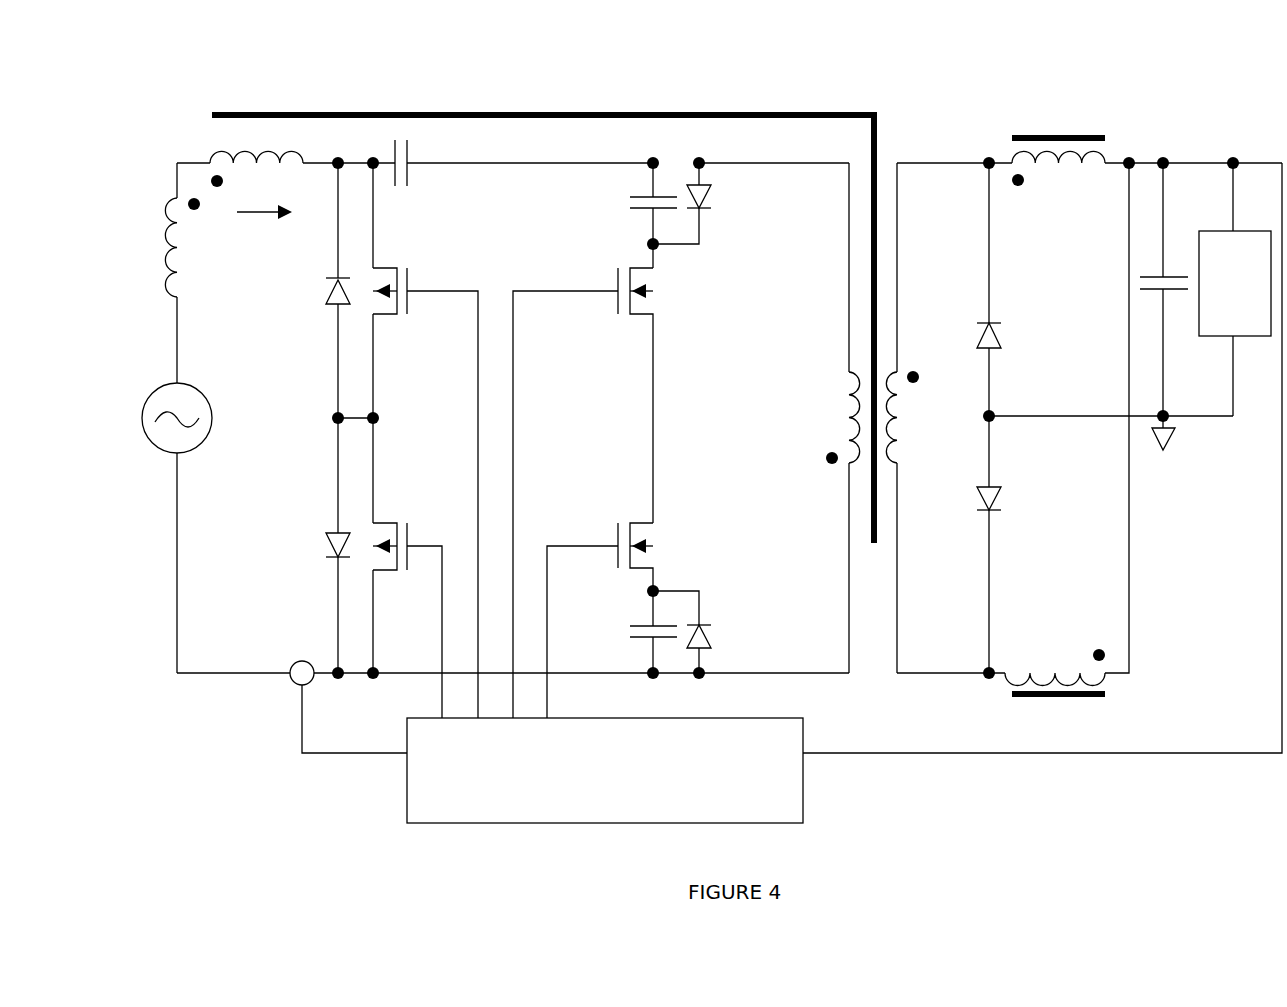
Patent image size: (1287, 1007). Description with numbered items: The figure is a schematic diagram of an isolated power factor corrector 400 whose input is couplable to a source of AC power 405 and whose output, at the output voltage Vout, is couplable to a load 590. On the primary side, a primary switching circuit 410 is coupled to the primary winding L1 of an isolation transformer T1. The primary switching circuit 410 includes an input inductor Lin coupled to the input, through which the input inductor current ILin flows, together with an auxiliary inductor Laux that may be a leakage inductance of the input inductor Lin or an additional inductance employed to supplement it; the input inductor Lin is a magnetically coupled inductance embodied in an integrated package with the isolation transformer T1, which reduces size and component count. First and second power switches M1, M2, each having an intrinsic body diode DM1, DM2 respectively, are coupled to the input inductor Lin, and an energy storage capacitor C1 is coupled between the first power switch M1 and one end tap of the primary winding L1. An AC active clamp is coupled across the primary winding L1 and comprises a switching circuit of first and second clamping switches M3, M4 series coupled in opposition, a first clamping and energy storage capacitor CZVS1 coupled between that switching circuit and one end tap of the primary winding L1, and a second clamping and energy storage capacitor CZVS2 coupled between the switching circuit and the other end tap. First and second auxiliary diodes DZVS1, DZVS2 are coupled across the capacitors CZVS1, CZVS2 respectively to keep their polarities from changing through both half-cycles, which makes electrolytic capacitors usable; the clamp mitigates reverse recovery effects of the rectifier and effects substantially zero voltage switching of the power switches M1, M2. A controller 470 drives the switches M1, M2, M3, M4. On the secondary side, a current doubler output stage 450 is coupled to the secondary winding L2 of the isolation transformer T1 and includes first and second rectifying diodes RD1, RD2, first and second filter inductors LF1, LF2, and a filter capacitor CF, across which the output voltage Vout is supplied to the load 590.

The isolated power factor corrector 400 is at (148, 66).
The primary switching circuit 410 is at (420, 105).
The current doubler output stage 450 is at (1190, 115).
The source of AC power 405 is at (184, 418).
The controller 470 is at (605, 770).
The load 590 is at (1235, 289).
The input inductor Lin is at (286, 145).
The auxiliary inductor Laux is at (200, 236).
The input inductor current ILin is at (264, 202).
The energy storage capacitor C1 is at (520, 173).
The intrinsic body diode of first power switch DM1 is at (316, 290).
The intrinsic body diode of second power switch DM2 is at (316, 545).
The first power switch M1 is at (425, 440).
The second power switch M2 is at (407, 568).
The first clamping switch M3 is at (583, 481).
The second clamping switch M4 is at (600, 608).
The first clamping and energy storage capacitor CZVS1 is at (613, 215).
The second clamping and energy storage capacitor CZVS2 is at (613, 649).
The first auxiliary diode DZVS1 is at (715, 203).
The second auxiliary diode DZVS2 is at (715, 632).
The primary winding L1 is at (839, 418).
The secondary winding L2 is at (904, 418).
The isolation transformer T1 is at (918, 350).
The first filter inductor LF1 is at (1147, 166).
The second filter inductor LF2 is at (1067, 428).
The first rectifying diode RD1 is at (1010, 289).
The second rectifying diode RD2 is at (1010, 544).
The filter capacitor CF is at (1160, 306).
The output voltage Vout is at (1042, 440).